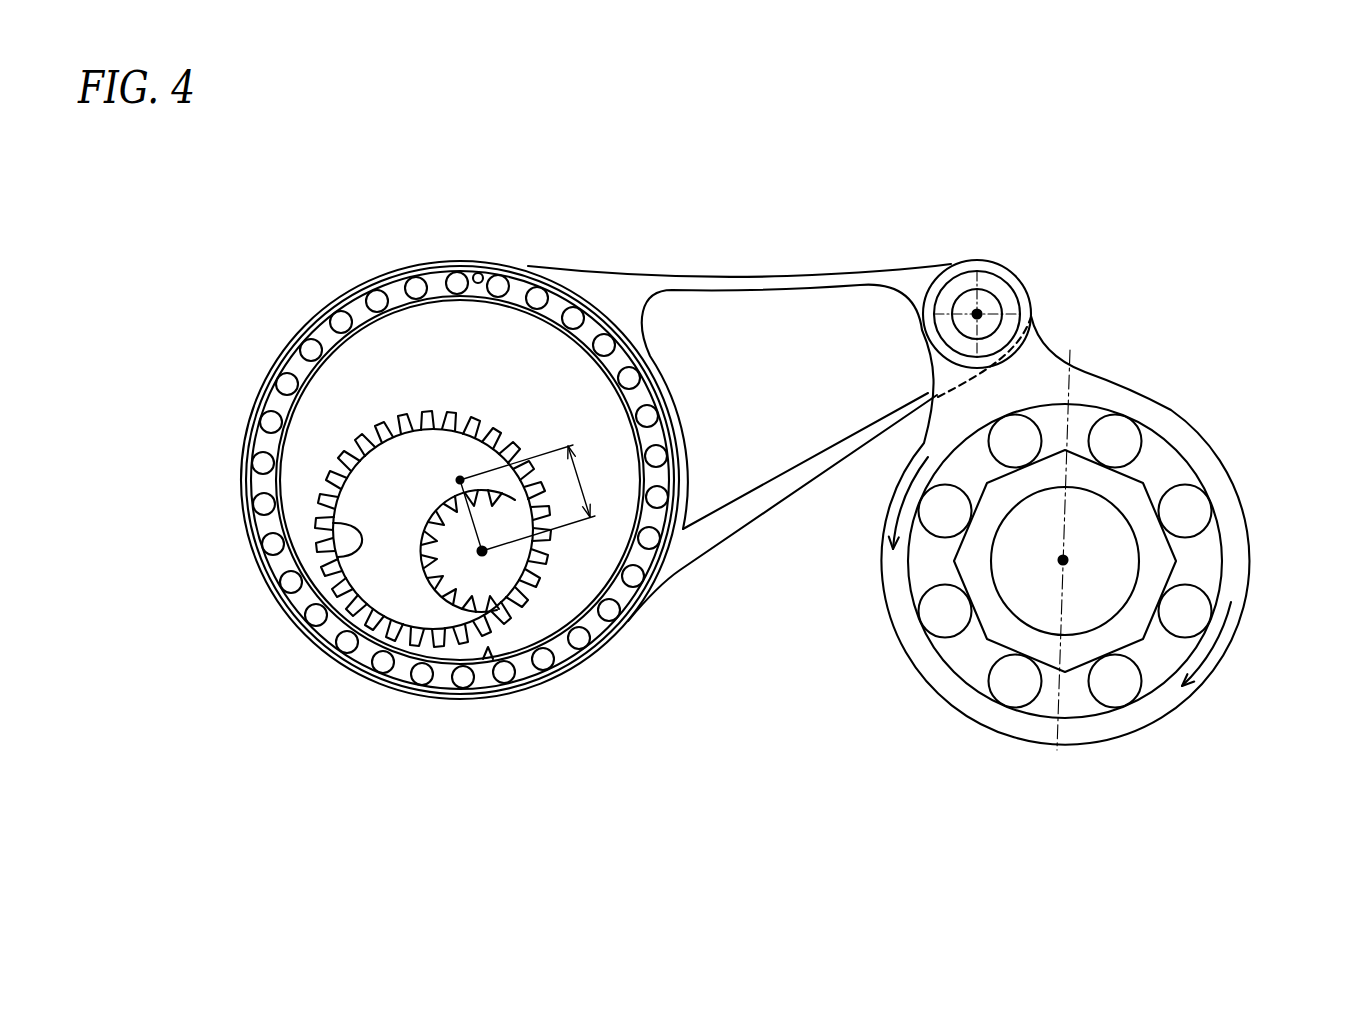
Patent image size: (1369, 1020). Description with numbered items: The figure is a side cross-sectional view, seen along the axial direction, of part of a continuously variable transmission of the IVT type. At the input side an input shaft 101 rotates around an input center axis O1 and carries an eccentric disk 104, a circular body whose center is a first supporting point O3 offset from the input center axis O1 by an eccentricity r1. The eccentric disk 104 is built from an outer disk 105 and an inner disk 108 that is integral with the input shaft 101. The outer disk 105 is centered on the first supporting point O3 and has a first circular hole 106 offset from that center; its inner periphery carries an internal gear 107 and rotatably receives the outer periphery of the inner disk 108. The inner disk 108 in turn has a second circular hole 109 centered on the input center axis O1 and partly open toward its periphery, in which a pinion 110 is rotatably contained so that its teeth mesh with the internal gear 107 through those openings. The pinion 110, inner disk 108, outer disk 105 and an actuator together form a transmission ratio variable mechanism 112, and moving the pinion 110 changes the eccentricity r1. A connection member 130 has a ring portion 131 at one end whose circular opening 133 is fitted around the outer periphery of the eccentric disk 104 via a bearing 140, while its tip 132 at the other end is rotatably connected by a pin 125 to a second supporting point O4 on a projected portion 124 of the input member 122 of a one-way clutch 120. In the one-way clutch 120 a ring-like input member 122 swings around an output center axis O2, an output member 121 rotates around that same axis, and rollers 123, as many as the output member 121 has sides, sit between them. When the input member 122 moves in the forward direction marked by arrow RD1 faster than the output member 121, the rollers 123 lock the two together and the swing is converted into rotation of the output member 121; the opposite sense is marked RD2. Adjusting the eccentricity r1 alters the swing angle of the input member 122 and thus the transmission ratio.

The input shaft 101 is at (402, 596).
The eccentric disk 104 is at (600, 557).
The outer disk 105 is at (303, 465).
The first circular hole 106 is at (338, 557).
The internal gear 107 is at (352, 440).
The inner disk 108 is at (375, 594).
The second circular hole 109 is at (460, 603).
The pinion 110 is at (513, 590).
The transmission ratio variable mechanism 112 is at (488, 650).
The one-way clutch 120 is at (1076, 330).
The output member 121 is at (1153, 550).
The input member 122 is at (1130, 400).
The rollers 123 is at (1183, 503).
The projected portion 124 is at (945, 270).
The pin 125 is at (977, 290).
The connection member 130 is at (692, 274).
The ring portion 131 is at (338, 298).
The tip 132 is at (907, 271).
The circular opening 133 is at (481, 279).
The bearing 140 is at (534, 296).
The input center axis O1 is at (484, 554).
The output center axis O2 is at (1063, 560).
The first supporting point O3 is at (460, 480).
The second supporting point O4 is at (980, 307).
The eccentricity r1 is at (536, 498).
The forward direction RD1 is at (895, 513).
The rotation direction 2 RD2 is at (1216, 643).